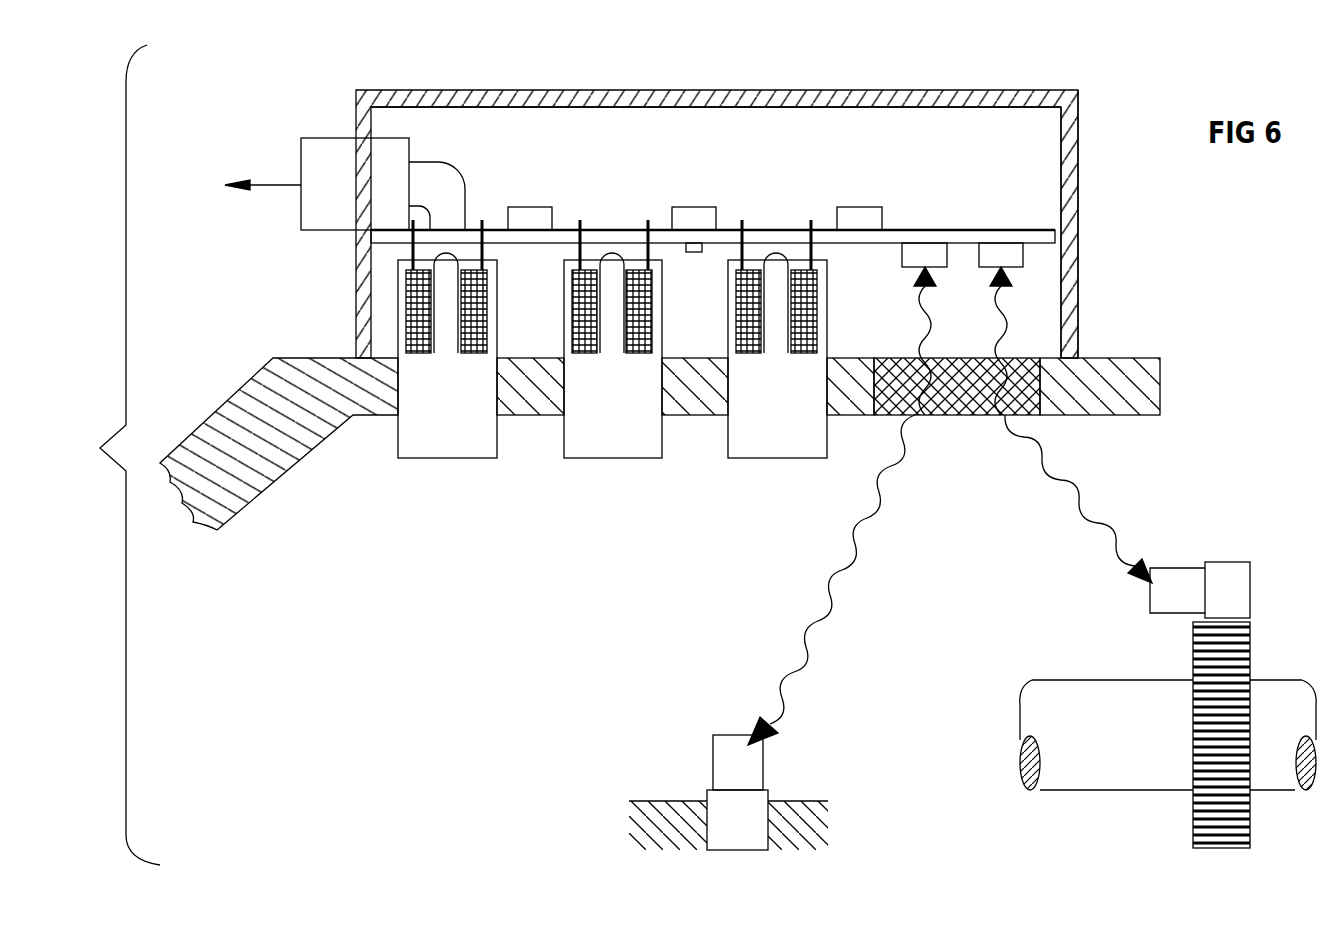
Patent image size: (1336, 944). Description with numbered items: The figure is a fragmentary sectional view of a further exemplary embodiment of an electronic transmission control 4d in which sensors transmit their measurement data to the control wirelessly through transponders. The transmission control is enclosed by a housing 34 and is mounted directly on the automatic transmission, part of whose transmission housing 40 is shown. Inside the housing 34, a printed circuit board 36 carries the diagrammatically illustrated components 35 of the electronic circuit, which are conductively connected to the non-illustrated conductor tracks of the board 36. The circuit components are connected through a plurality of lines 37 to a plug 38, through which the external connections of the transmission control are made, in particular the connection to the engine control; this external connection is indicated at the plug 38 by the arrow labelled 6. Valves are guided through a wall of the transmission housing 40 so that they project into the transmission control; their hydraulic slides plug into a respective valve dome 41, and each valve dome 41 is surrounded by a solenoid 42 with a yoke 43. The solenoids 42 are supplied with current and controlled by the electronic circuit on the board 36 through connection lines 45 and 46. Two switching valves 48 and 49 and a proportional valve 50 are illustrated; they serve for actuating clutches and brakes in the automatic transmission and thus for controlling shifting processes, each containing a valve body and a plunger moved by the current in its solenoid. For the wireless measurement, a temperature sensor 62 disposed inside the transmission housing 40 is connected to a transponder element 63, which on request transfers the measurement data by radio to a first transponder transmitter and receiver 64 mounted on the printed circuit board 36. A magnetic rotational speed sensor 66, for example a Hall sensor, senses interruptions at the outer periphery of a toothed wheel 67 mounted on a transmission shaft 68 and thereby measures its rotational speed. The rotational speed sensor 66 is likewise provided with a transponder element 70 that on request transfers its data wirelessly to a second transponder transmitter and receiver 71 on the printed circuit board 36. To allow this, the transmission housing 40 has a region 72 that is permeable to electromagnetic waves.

The transmission control 4d is at (770, 86).
The housing 34 is at (1015, 95).
The components 35 is at (695, 210).
The printed circuit board 36 is at (1078, 214).
The lines 37 is at (449, 185).
The plug 38 is at (325, 147).
The line to unit 2 6 is at (272, 185).
The transmission housing 40 is at (200, 442).
The valve dome 41 is at (443, 303).
The solenoid 42 is at (417, 328).
The yoke 43 is at (495, 325).
The connection line 45 is at (412, 248).
The connection line 46 is at (483, 250).
The switching valve 48 is at (406, 380).
The switching valve 49 is at (607, 446).
The proportional valve 50 is at (770, 445).
The temperature sensor 62 is at (717, 803).
The transponder element 63 is at (750, 767).
The first transponder transmitter and receiver 64 is at (930, 247).
The rotational speed sensor 66 is at (1225, 562).
The toothed wheel 67 is at (1250, 833).
The transmission shaft 68 is at (1278, 690).
The transponder element 70 is at (1158, 600).
The second transponder transmitter and receiver 71 is at (1000, 247).
The region permeable to electromagnetic waves 72 is at (965, 418).